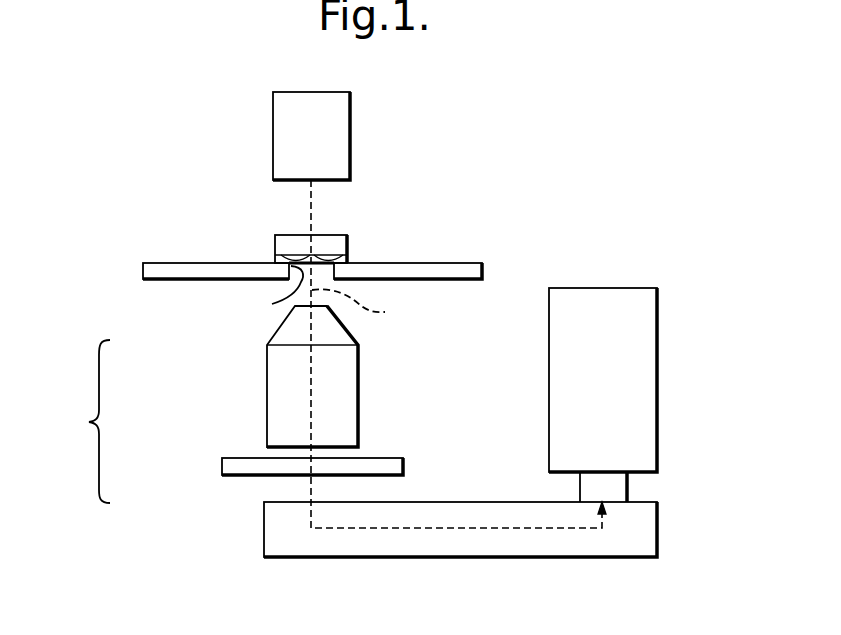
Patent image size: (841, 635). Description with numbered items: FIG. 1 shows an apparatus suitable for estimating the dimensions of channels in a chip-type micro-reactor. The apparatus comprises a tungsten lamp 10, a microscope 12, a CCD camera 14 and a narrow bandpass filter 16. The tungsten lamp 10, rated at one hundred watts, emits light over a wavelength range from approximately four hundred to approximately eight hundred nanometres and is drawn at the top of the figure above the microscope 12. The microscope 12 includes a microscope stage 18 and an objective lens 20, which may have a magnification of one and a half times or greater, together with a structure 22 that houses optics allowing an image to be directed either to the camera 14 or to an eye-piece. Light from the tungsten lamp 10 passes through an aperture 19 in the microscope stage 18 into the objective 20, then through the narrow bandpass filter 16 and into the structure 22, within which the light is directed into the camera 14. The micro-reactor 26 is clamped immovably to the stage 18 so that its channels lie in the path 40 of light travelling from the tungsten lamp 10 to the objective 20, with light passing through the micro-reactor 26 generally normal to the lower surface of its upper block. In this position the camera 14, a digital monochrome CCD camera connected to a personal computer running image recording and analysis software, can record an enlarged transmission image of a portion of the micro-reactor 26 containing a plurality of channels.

The tungsten lamp 10 is at (332, 120).
The micro-reactor 26 is at (332, 243).
The microscope stage 18 is at (178, 270).
The aperture 19 is at (272, 304).
The path of light 40 is at (367, 308).
The objective lens 20 is at (276, 418).
The narrow bandpass filter 16 is at (383, 464).
The structure 22 is at (277, 528).
The CCD camera 14 is at (632, 344).
The microscope 12 is at (81, 421).